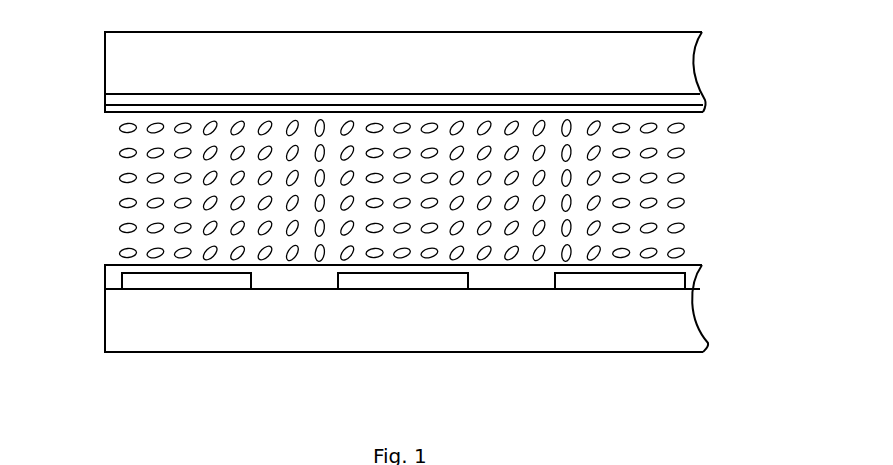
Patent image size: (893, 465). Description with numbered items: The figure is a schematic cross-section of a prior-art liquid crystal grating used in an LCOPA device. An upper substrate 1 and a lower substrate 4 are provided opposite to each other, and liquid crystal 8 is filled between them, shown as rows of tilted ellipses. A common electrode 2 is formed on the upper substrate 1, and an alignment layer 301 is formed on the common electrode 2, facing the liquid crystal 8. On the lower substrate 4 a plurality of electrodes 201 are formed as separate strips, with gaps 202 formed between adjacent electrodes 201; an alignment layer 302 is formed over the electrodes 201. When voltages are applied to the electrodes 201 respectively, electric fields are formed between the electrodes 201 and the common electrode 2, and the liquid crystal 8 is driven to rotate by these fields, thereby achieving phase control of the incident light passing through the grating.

The upper substrate 1 is at (115, 54).
The common electrode 2 is at (115, 100).
The alignment layer 301 is at (115, 110).
The liquid crystal 8 is at (128, 177).
The alignment layer 302 is at (115, 279).
The electrodes 201 is at (672, 285).
The gaps 202 is at (290, 282).
The lower substrate 4 is at (690, 340).